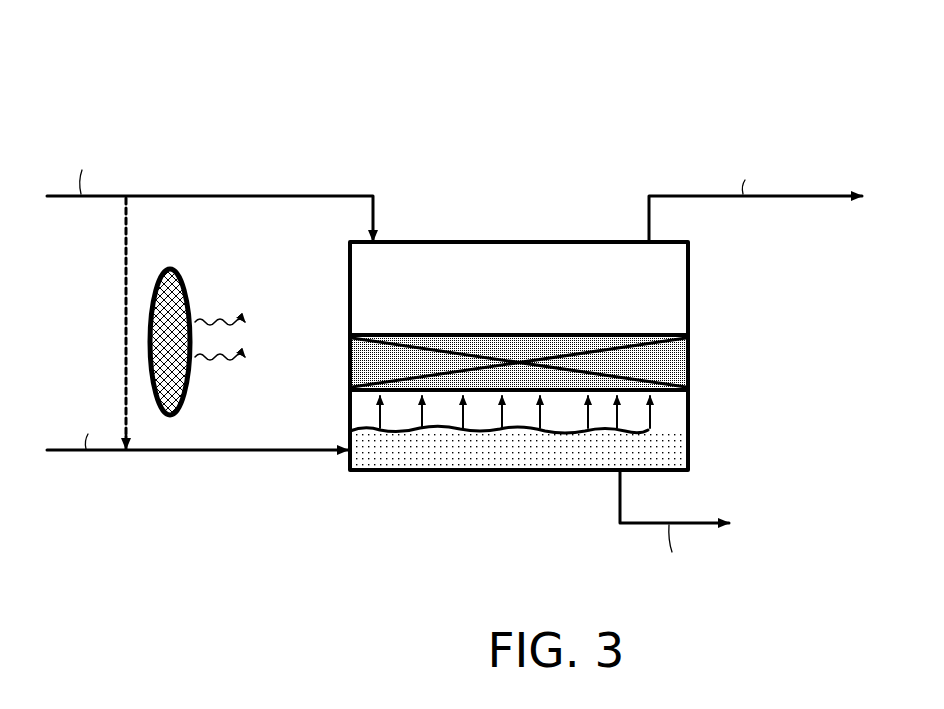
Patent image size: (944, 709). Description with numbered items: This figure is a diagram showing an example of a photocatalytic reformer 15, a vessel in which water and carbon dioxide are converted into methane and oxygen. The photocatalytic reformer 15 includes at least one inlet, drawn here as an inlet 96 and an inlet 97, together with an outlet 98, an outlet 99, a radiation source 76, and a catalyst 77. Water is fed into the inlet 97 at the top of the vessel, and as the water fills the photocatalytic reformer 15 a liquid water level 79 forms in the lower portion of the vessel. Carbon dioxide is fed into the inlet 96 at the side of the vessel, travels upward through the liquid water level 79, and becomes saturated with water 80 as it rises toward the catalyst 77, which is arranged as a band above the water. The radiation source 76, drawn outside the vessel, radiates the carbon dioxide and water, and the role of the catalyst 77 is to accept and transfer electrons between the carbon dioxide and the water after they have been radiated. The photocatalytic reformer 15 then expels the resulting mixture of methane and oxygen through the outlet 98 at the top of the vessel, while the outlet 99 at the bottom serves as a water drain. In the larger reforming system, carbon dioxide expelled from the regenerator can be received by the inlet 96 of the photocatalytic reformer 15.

The photocatalytic reformer 15 is at (394, 92).
The radiation source 76 is at (187, 292).
The catalyst 77 is at (695, 363).
The liquid water level 79 is at (646, 458).
The carbon dioxide saturated with water 80 is at (673, 414).
The inlet 96 is at (344, 458).
The inlet 97 is at (379, 240).
The outlet 98 is at (646, 240).
The outlet 99 is at (611, 475).